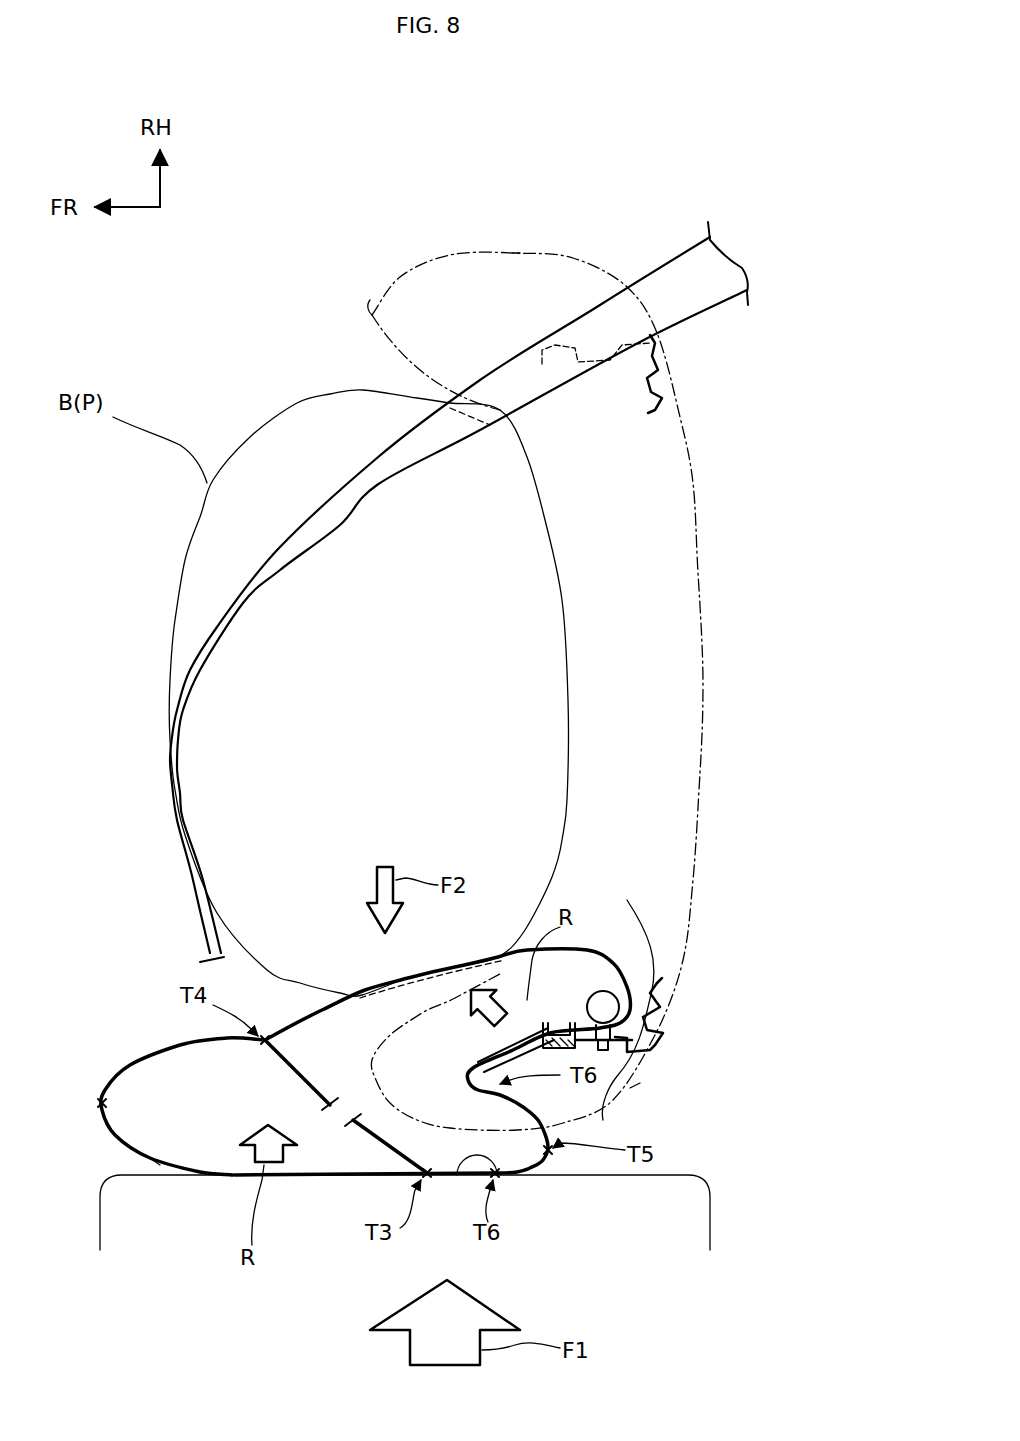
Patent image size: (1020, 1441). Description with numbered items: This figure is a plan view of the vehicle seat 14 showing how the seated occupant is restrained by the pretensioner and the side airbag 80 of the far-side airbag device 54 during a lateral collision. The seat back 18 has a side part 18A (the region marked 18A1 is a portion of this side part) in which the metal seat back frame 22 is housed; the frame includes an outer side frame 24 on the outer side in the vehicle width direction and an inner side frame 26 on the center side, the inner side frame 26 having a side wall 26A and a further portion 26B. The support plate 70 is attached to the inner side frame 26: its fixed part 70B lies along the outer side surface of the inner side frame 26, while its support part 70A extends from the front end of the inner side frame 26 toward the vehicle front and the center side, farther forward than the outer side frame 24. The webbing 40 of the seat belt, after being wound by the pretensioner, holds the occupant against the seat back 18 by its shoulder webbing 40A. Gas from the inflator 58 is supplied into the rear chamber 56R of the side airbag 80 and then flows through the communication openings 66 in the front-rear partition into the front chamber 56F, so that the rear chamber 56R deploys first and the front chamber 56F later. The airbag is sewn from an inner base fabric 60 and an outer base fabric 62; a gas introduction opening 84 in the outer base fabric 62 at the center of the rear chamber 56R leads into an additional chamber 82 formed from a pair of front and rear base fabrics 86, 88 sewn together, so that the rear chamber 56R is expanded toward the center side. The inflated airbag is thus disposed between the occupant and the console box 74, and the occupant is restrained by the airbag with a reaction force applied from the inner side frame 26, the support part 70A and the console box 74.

The vehicle seat 14 is at (624, 691).
The seat back 18 is at (706, 684).
The side part 18A is at (480, 253).
The head side skin portion 18A1 is at (370, 314).
The seat back frame 22 is at (685, 729).
The outer side frame 24 is at (665, 390).
The inner side frame 26 is at (721, 1050).
The side wall 26A is at (640, 1083).
The clip hook portion 26B is at (667, 987).
The webbing 40 is at (459, 551).
The shoulder webbing 40A is at (663, 275).
The far-side airbag device 54 is at (419, 1083).
The front chamber 56F is at (183, 1106).
The rear chamber 56R is at (447, 1061).
The inflator 58 is at (469, 1022).
The inner base fabric 60 is at (278, 1033).
The outer base fabric 62 is at (165, 1167).
The communication openings 66 is at (343, 1123).
The support plate 70 is at (596, 997).
The support part 70A is at (487, 1053).
The fixed part 70B is at (640, 1000).
The console box 74 is at (712, 1218).
The side airbag 80 is at (165, 1072).
The additional chamber 82 is at (660, 1190).
The gas introduction opening 84 is at (457, 1177).
The front base fabric 86 is at (548, 1152).
The rear base fabric 88 is at (563, 1125).